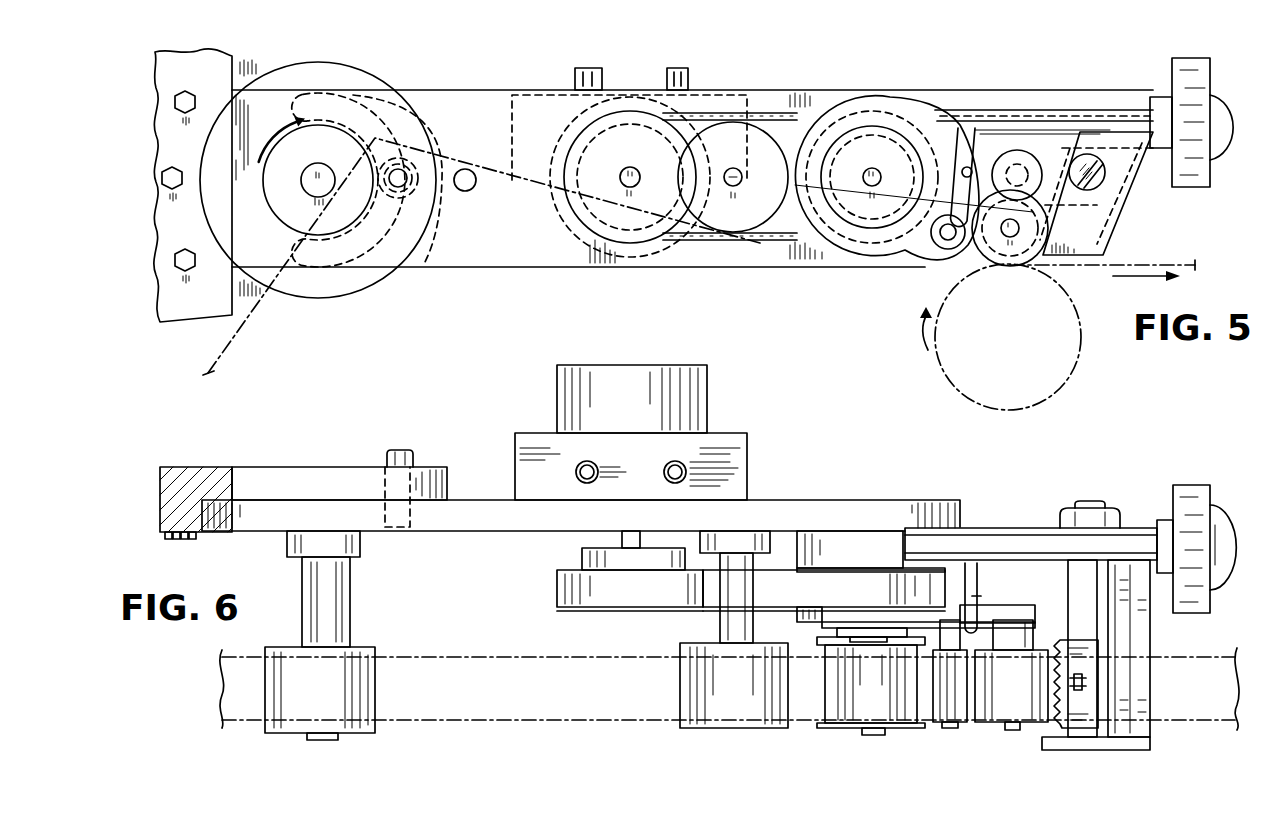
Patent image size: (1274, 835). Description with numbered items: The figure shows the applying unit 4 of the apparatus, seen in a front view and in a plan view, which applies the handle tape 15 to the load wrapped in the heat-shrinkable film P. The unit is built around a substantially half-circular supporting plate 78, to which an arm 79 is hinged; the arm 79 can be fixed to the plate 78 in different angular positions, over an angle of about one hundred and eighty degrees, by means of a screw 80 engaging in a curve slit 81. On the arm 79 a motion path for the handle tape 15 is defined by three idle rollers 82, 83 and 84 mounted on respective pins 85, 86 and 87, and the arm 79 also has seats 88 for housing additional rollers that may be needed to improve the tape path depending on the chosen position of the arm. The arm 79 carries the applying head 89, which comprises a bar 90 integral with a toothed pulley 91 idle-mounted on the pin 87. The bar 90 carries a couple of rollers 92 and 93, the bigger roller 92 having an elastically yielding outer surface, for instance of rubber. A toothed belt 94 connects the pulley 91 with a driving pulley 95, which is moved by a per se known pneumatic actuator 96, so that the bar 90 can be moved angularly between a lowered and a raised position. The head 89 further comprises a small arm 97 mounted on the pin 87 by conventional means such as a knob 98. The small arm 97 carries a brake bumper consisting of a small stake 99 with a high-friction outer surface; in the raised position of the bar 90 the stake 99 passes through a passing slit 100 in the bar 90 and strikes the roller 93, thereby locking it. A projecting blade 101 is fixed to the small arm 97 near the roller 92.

In FIG. 5, the applying unit 4 is at (520, 79).
In FIG. 6, the applying unit 4 is at (170, 672).
In FIG. 5, the handle tape 15 is at (492, 168).
In FIG. 6, the handle tape 15 is at (451, 657).
In FIG. 5, the supporting plate 78 is at (255, 60).
In FIG. 6, the supporting plate 78 is at (255, 480).
In FIG. 5, the arm 79 is at (427, 89).
In FIG. 6, the arm 79 is at (500, 508).
In FIG. 5, the screw 80 is at (403, 200).
In FIG. 6, the screw 80 is at (406, 450).
In FIG. 5, the curve slit 81 is at (353, 93).
In FIG. 5, the roller 82 is at (288, 210).
In FIG. 6, the roller 82 is at (283, 737).
In FIG. 5, the roller 83 is at (760, 135).
In FIG. 6, the roller 83 is at (695, 731).
In FIG. 5, the roller 84 is at (851, 138).
In FIG. 6, the roller 84 is at (846, 730).
In FIG. 5, the pin 85 is at (305, 182).
In FIG. 6, the pin 85 is at (325, 742).
In FIG. 5, the pin 86 is at (736, 190).
In FIG. 6, the pin 86 is at (737, 733).
In FIG. 5, the pin 87 is at (875, 168).
In FIG. 6, the pin 87 is at (881, 737).
In FIG. 5, the seats 88 is at (464, 192).
In FIG. 5, the applying head 89 is at (1048, 96).
In FIG. 6, the applying head 89 is at (1197, 627).
In FIG. 5, the bar 90 is at (893, 108).
In FIG. 6, the bar 90 is at (800, 623).
In FIG. 6, the toothed pulley 91 is at (862, 560).
In FIG. 5, the roller 92 is at (987, 254).
In FIG. 6, the roller 92 is at (998, 713).
In FIG. 5, the roller 93 is at (943, 250).
In FIG. 6, the roller 93 is at (949, 712).
In FIG. 6, the toothed belt 94 is at (778, 577).
In FIG. 5, the driving pulley 95 is at (628, 118).
In FIG. 6, the driving pulley 95 is at (600, 612).
In FIG. 6, the pneumatic actuator 96 is at (550, 398).
In FIG. 5, the small arm 97 is at (1057, 150).
In FIG. 6, the small arm 97 is at (1030, 527).
In FIG. 5, the knob 98 is at (1212, 73).
In FIG. 6, the knob 98 is at (1212, 497).
In FIG. 5, the small stake 99 is at (962, 150).
In FIG. 6, the small stake 99 is at (976, 580).
In FIG. 5, the passing slit 100 is at (993, 176).
In FIG. 6, the passing slit 100 is at (978, 599).
In FIG. 5, the projecting blade 101 is at (1106, 240).
In FIG. 6, the projecting blade 101 is at (1090, 725).
In FIG. 5, the heat-shrinkable film P is at (1080, 268).